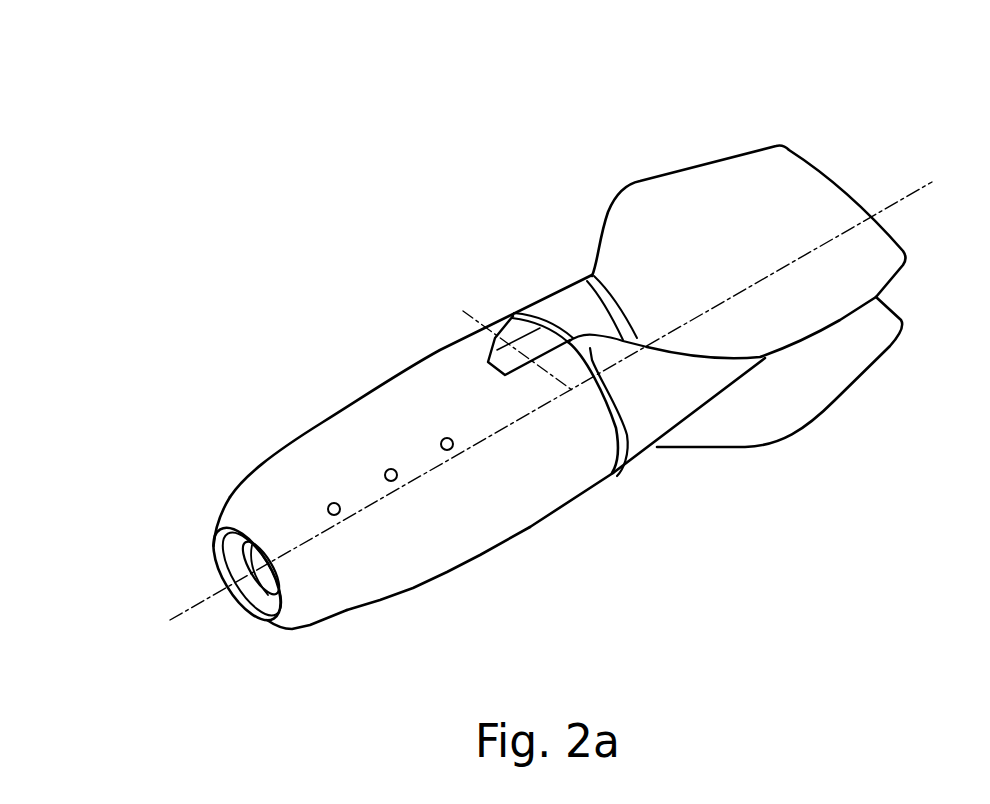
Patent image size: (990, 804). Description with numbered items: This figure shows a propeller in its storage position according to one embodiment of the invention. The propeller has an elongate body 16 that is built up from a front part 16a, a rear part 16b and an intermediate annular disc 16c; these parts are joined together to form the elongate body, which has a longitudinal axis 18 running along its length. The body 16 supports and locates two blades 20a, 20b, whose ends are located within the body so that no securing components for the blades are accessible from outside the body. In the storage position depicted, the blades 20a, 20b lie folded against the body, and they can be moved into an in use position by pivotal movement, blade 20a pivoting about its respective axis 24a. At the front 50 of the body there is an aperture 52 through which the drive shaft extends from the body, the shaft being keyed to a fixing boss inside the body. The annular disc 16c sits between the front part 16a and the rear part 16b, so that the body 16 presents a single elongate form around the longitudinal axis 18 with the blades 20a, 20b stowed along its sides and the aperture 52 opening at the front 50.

The body 16 is at (435, 358).
The front part 16a is at (377, 558).
The rear part 16b is at (555, 478).
The intermediate annular disc 16c is at (460, 524).
The longitudinal axis 18 is at (182, 617).
The blade 20a is at (733, 178).
The blade 20b is at (836, 372).
The axis 24a is at (468, 311).
The front 50 is at (235, 522).
The aperture 52 is at (242, 605).